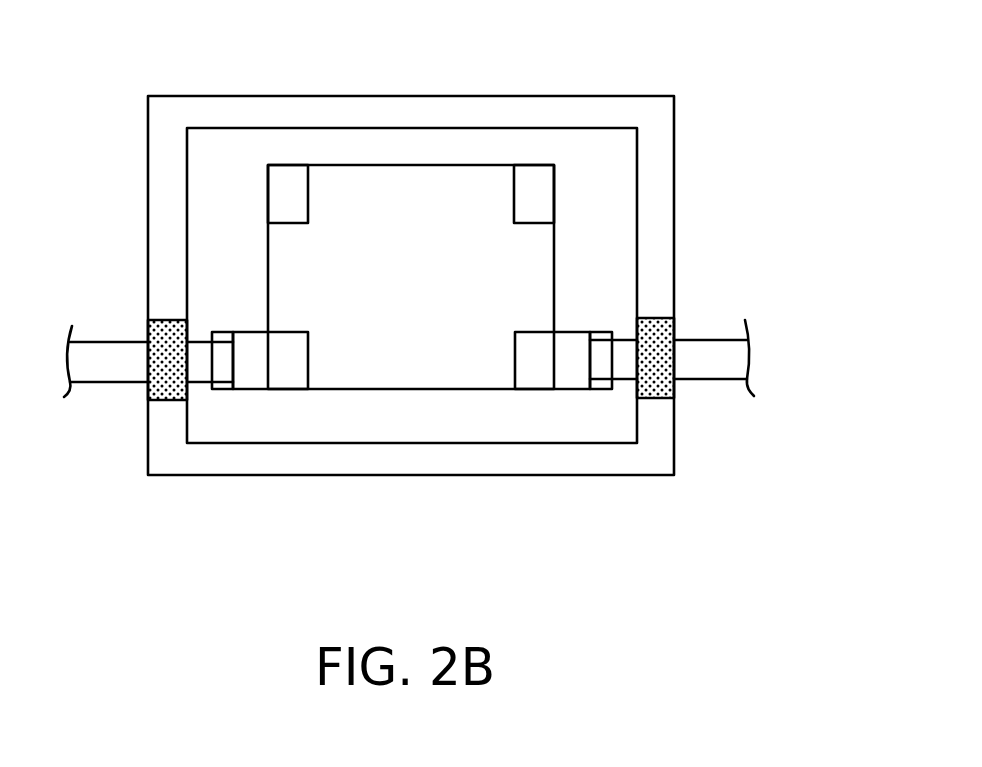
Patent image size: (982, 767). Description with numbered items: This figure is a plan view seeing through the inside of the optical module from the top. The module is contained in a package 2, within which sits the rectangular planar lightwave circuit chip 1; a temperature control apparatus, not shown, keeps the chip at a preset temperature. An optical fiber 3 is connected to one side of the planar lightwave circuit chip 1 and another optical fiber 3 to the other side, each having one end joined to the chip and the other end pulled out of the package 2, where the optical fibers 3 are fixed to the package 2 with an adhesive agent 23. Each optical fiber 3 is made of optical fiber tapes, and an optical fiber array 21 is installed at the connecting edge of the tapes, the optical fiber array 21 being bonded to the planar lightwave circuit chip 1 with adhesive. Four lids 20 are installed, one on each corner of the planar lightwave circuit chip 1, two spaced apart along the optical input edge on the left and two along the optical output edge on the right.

The planar lightwave circuit chip 1 is at (415, 372).
The package 2 is at (562, 110).
The optical fiber 3 is at (118, 370).
The lid 20 is at (287, 187).
The optical fiber array 21 is at (223, 387).
The adhesive agent 23 is at (148, 332).